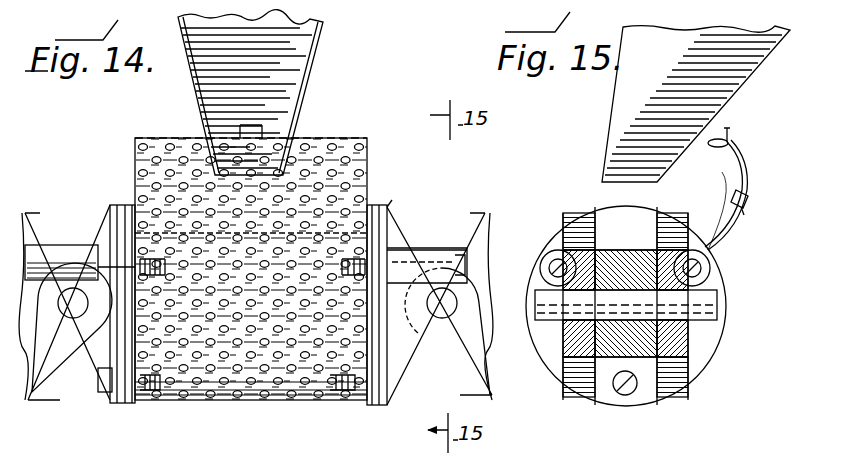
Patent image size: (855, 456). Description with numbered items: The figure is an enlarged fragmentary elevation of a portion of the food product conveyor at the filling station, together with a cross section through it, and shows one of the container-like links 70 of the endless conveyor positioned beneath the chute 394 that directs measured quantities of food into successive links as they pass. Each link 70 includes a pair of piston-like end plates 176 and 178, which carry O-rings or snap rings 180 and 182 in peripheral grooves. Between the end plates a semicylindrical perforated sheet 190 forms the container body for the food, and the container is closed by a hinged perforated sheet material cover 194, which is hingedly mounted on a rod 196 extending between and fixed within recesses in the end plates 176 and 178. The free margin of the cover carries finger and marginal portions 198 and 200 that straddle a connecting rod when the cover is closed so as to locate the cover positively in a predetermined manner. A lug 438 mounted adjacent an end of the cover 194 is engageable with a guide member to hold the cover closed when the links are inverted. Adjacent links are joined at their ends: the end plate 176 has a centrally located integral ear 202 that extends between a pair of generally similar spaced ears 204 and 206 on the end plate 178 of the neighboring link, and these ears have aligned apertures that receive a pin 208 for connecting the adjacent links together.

In FIG. 14, the chute 394 is at (320, 62).
In FIG. 15, the chute 394 is at (625, 107).
In FIG. 14, the hinged perforated sheet material cover 194 is at (338, 153).
In FIG. 15, the hinged perforated sheet material cover 194 is at (770, 249).
In FIG. 14, the O-ring or snap ring 180 is at (126, 205).
In FIG. 14, the O-ring or snap ring 182 is at (374, 208).
In FIG. 14, the piston-like end plate 176 is at (113, 343).
In FIG. 14, the piston-like end plate 178 is at (388, 350).
In FIG. 14, the integral ear 202 is at (88, 227).
In FIG. 14, the spaced ear 204 is at (405, 230).
In FIG. 15, the spaced ear 204 is at (577, 357).
In FIG. 15, the spaced ear 206 is at (680, 370).
In FIG. 14, the pin 208 is at (73, 306).
In FIG. 15, the pin 208 is at (684, 302).
In FIG. 14, the container-like link 70 is at (392, 200).
In FIG. 15, the container-like link 70 is at (552, 227).
In FIG. 14, the semicylindrical perforated sheet 190 is at (221, 378).
In FIG. 15, the rod 196 is at (680, 250).
In FIG. 15, the finger portion 198 is at (725, 120).
In FIG. 15, the marginal portion 200 is at (733, 140).
In FIG. 15, the lug 438 is at (743, 193).